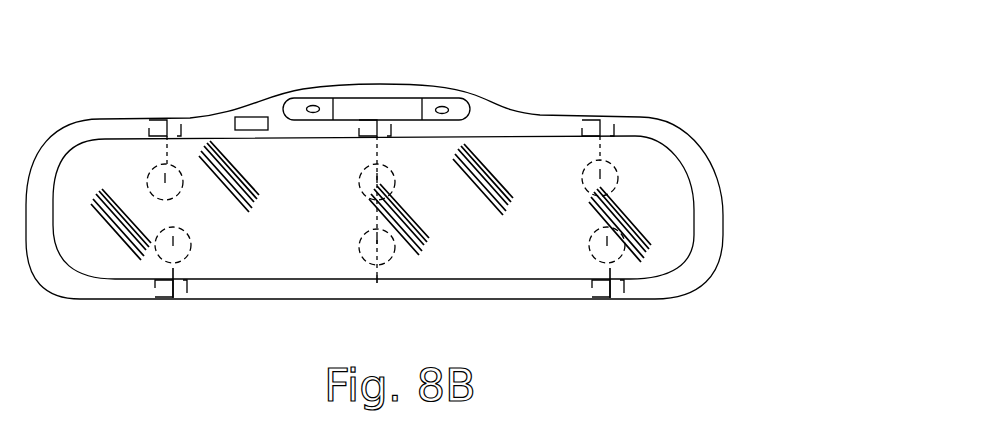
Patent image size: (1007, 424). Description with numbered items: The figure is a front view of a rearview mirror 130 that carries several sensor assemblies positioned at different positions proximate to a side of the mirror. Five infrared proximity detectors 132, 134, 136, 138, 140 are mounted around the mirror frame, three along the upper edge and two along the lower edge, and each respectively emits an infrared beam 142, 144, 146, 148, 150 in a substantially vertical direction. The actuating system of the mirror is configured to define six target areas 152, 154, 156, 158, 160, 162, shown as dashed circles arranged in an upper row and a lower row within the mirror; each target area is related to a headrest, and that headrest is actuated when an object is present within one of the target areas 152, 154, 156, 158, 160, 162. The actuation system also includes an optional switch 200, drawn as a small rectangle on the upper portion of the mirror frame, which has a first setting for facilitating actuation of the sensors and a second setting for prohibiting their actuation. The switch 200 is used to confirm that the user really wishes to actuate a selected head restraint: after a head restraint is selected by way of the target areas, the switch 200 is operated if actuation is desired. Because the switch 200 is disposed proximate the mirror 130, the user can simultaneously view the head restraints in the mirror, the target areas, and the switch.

The rearview mirror 130 is at (678, 56).
The infrared proximity detector 132 is at (167, 120).
The infrared proximity detector 134 is at (377, 120).
The infrared proximity detector 136 is at (600, 120).
The infrared proximity detector 138 is at (173, 298).
The infrared proximity detector 140 is at (611, 298).
The infrared beam 142 is at (167, 155).
The infrared beam 144 is at (370, 150).
The infrared beam 146 is at (600, 155).
The infrared beam 148 is at (173, 270).
The infrared beam 150 is at (612, 270).
The target area 152 is at (182, 187).
The target area 154 is at (391, 175).
The target area 156 is at (613, 187).
The target area 158 is at (153, 260).
The target area 160 is at (363, 258).
The target area 162 is at (590, 260).
The switch 200 is at (255, 117).